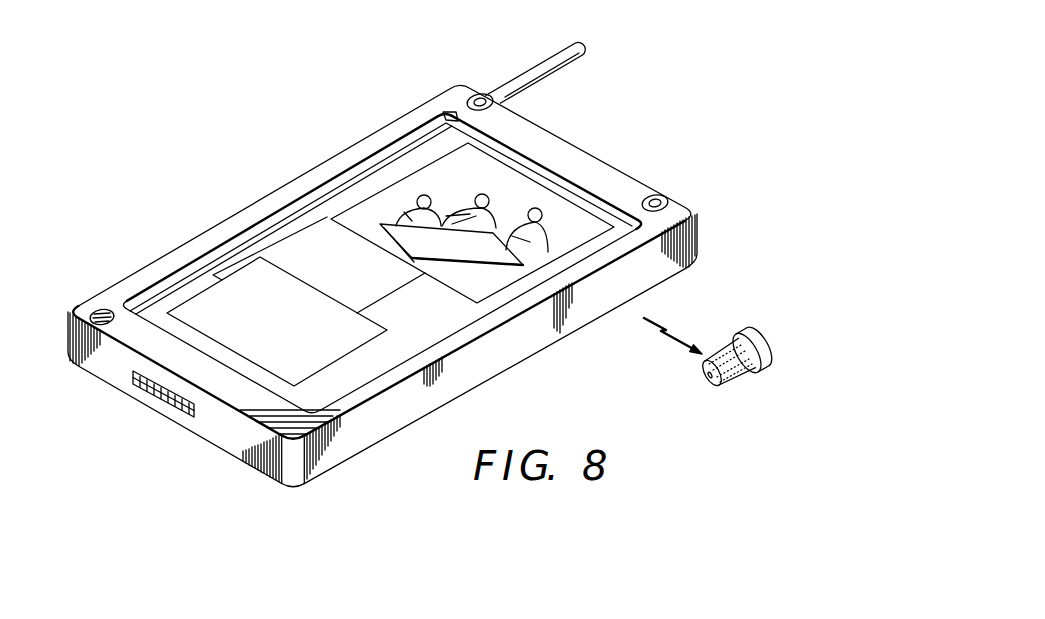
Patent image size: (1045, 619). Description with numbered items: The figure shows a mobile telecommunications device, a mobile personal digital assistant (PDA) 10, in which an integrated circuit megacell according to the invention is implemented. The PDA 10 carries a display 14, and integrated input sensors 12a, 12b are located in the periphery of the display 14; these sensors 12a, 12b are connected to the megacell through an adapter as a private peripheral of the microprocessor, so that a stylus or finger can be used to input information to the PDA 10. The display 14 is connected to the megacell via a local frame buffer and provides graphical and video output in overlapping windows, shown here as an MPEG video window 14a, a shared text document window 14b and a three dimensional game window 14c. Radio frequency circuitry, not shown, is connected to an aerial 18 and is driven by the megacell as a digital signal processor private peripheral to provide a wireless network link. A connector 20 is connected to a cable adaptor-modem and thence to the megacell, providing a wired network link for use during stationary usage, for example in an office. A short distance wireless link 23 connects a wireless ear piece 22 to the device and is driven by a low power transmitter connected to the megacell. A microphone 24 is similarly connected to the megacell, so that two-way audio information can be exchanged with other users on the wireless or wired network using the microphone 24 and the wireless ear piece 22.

The mobile personal digital assistant 10 is at (592, 377).
The integrated input sensor 12a is at (333, 178).
The integrated input sensor 12b is at (575, 178).
The display 14 is at (152, 305).
The MPEG video window 14a is at (425, 178).
The shared text document window 14b is at (300, 227).
The three dimensional game window 14c is at (208, 300).
The aerial 18 is at (537, 68).
The connector 20 is at (150, 389).
The ear piece 22 is at (763, 342).
The short distance wireless link 23 is at (690, 322).
The microphone 24 is at (93, 311).